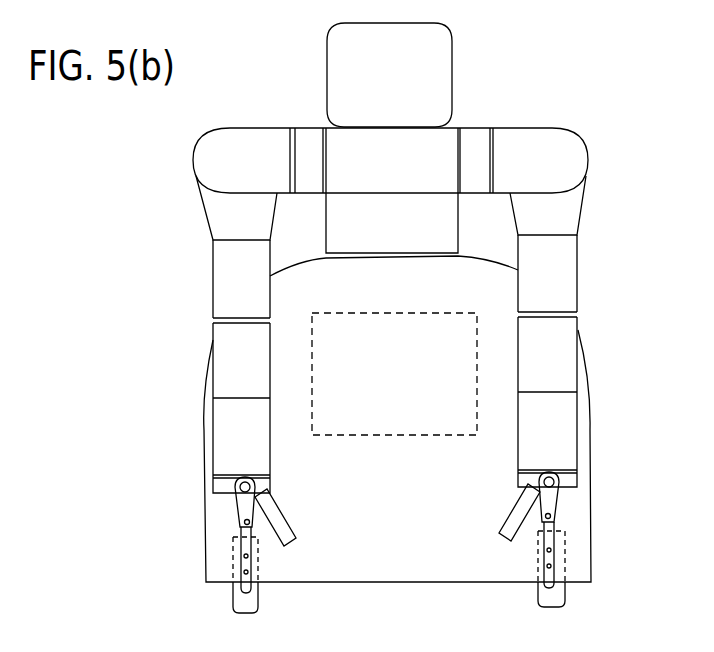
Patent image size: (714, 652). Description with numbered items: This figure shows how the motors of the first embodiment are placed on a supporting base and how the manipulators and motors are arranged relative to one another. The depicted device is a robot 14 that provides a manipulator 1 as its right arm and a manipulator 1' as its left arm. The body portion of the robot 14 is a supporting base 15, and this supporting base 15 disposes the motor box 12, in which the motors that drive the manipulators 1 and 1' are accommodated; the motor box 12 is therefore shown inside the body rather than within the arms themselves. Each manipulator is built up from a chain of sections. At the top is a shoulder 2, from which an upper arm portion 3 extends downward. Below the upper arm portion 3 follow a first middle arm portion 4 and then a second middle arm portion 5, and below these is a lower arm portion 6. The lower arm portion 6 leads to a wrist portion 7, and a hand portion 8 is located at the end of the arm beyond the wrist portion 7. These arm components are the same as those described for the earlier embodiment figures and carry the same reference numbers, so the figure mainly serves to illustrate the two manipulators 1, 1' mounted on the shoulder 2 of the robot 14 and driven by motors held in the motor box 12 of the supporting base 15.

The manipulator 1 is at (353, 368).
The manipulator 1' is at (500, 190).
The shoulder 2 is at (226, 150).
The upper arm portion 3 is at (220, 220).
The first middle arm portion 4 is at (224, 302).
The second middle arm portion 5 is at (226, 365).
The lower arm portion 6 is at (226, 432).
The wrist portion 7 is at (222, 487).
The hand portion 8 is at (240, 512).
The motor box 12 is at (478, 383).
The robot 14 is at (521, 81).
The supporting base 15 is at (593, 508).